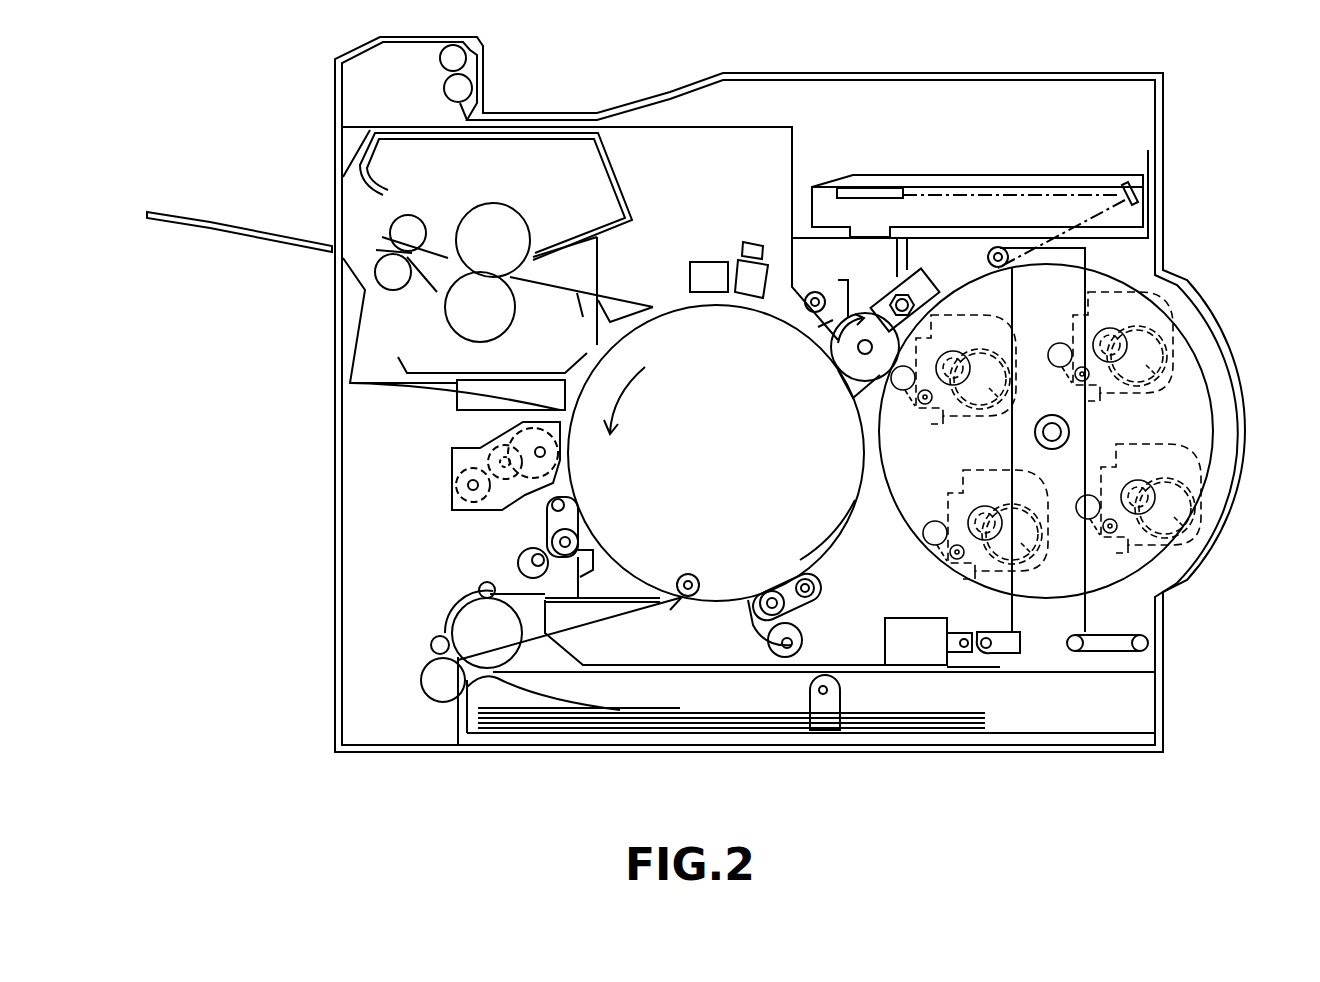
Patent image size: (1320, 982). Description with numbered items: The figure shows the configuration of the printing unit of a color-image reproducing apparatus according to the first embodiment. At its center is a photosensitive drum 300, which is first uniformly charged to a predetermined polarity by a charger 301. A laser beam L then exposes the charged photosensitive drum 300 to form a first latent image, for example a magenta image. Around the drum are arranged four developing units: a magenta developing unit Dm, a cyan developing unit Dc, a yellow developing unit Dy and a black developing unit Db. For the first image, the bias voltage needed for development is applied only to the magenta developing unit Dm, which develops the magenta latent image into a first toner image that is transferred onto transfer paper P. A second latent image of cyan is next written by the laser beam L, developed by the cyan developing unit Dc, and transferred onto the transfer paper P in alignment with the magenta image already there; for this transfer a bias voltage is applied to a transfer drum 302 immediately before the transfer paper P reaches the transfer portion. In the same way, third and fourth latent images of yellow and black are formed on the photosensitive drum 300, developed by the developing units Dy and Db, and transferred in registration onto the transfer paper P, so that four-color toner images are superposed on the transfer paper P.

The photosensitive drum 300 is at (860, 395).
The charger 301 is at (930, 280).
The transfer drum 302 is at (838, 525).
The laser beam L is at (1080, 190).
The yellow developing unit Dy is at (993, 335).
The cyan developing unit Dc is at (1152, 308).
The black developing unit Db is at (950, 490).
The magenta developing unit Dm is at (1177, 500).
The transfer paper P is at (467, 687).